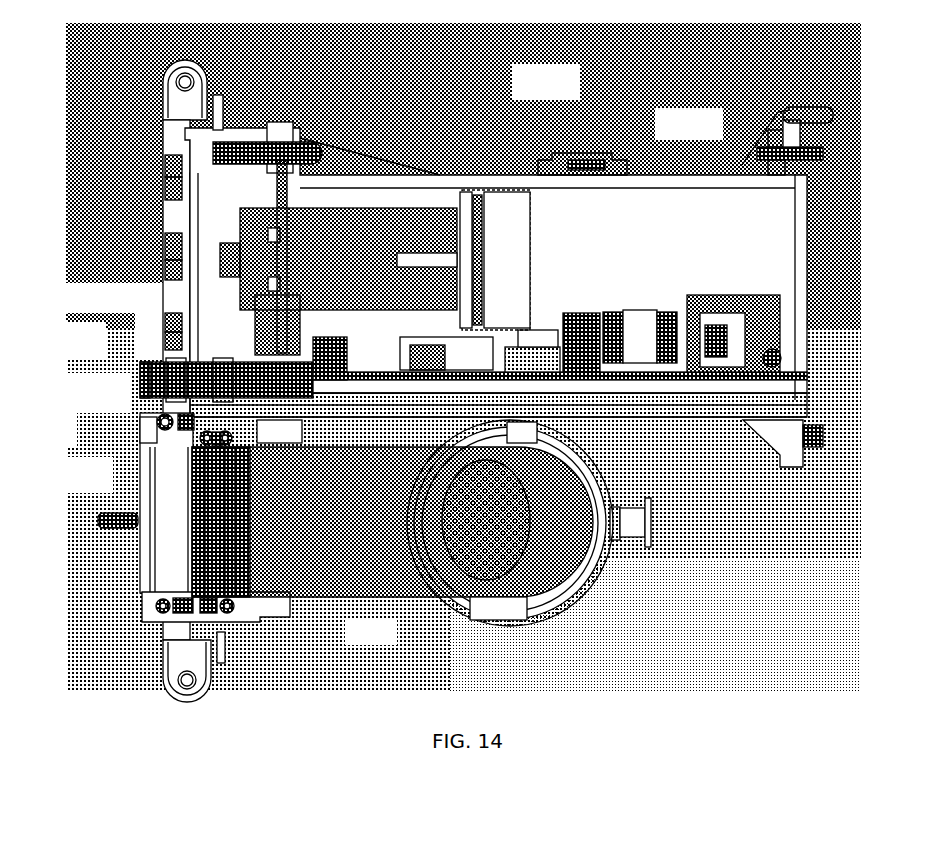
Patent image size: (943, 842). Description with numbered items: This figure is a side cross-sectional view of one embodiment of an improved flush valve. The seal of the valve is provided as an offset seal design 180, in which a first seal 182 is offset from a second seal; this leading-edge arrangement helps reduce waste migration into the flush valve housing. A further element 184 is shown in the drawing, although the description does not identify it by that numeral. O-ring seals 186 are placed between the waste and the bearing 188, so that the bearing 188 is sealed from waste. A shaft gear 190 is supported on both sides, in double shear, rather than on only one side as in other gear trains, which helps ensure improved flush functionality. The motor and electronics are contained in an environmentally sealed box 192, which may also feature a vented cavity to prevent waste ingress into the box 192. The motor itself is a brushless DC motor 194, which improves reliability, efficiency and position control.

The offset seal design 180 is at (135, 393).
The first seal 182 is at (162, 420).
The fasteners 184 is at (210, 440).
The o-ring seals 186 is at (223, 360).
The bearing 188 is at (150, 357).
The shaft gear 190 is at (260, 395).
The environmentally sealed box 192 is at (498, 162).
The brushless DC motor 194 is at (527, 258).